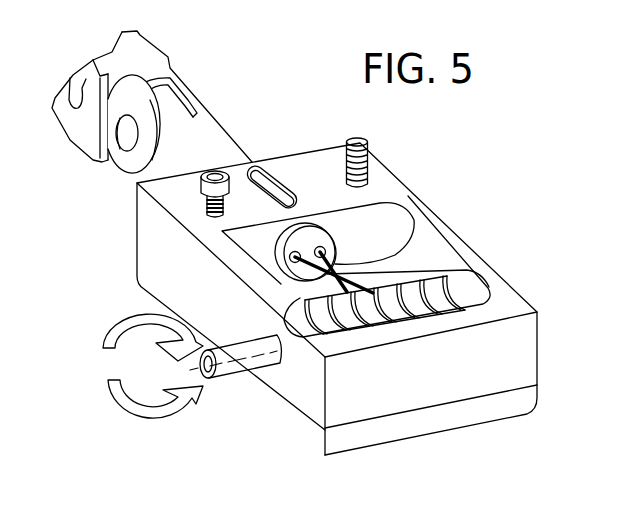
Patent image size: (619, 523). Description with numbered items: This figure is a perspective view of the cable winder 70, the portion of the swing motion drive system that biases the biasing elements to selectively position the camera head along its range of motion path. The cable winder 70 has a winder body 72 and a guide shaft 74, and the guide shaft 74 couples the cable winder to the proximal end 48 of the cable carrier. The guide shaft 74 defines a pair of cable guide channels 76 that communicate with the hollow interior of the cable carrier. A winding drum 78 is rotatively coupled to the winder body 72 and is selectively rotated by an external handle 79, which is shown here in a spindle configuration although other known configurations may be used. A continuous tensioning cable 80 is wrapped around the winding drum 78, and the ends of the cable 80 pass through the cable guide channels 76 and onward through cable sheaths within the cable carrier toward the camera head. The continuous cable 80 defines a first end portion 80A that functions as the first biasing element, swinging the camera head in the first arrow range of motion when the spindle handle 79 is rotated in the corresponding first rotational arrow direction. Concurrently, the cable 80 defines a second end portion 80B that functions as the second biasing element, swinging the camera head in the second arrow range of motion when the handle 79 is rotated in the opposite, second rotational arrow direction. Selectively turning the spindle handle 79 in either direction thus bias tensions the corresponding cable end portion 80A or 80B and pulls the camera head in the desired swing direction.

The proximal end 48 is at (123, 165).
The cable winder 70 is at (464, 212).
The winder body 72 is at (498, 263).
The guide shaft 74 is at (208, 143).
The cable guide channels 76 is at (307, 223).
The winding drum 78 is at (467, 293).
The handle 79 is at (233, 376).
The continuous tensioning cable 80 is at (400, 313).
The first end portion 80A is at (310, 223).
The second end portion 80B is at (333, 258).